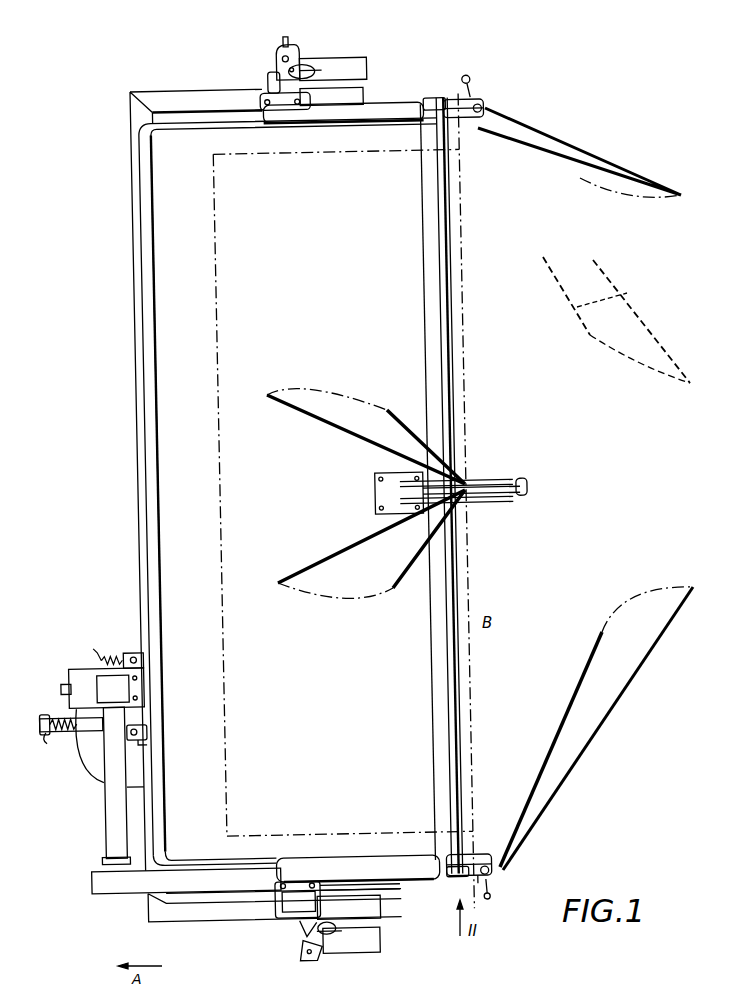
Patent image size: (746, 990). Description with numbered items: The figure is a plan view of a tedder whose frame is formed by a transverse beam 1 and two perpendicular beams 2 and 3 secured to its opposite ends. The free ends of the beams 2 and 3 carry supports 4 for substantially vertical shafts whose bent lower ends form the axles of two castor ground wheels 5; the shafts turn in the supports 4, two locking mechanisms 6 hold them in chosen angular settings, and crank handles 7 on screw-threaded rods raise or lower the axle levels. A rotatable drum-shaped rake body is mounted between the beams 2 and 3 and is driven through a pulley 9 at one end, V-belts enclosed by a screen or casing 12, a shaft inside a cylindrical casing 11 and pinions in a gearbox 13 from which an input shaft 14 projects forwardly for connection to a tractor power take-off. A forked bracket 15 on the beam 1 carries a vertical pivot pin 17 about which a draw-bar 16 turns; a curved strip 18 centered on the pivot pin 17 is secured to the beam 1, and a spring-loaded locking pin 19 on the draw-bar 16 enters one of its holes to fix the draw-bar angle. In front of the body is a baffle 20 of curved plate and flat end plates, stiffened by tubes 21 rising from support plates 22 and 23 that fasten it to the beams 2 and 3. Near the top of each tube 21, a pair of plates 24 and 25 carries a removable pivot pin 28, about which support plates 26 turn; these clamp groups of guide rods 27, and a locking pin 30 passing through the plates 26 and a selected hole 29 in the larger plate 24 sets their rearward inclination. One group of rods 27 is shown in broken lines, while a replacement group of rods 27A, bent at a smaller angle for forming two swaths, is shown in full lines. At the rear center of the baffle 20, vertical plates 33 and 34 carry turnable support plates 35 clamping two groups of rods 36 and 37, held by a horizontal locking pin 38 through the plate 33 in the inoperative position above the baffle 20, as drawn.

The beam 1 is at (138, 350).
The beam 2 is at (200, 918).
The beam 3 is at (205, 92).
The support 4 is at (268, 86).
The castor ground wheel 5 is at (367, 64).
The locking mechanism 6 is at (292, 50).
The crank handle 7 is at (320, 66).
The pulley 9 is at (392, 880).
The cylindrical casing 11 is at (112, 820).
The screen or casing 12 is at (132, 892).
The gearbox 13 is at (95, 666).
The input shaft 14 is at (64, 683).
The forked bracket 15 is at (148, 733).
The draw-bar 16 is at (46, 713).
The pivot pin 17 is at (150, 741).
The curved strip 18 is at (94, 770).
The locking pin 19 is at (48, 732).
The baffle 20 is at (152, 240).
The tube 21 is at (393, 104).
The support plate 22 is at (262, 97).
The support plate 23 is at (278, 868).
The plate 24 is at (462, 122).
The plate 25 is at (432, 100).
The support plate 26 is at (492, 878).
The guide rod 27 is at (612, 296).
The guide rod 27A is at (606, 172).
The removable pivot pin 28 is at (421, 135).
The hole 29 is at (470, 890).
The locking pin 30 is at (467, 78).
The vertical plate 33 is at (492, 505).
The vertical plate 34 is at (470, 478).
The support plate 35 is at (515, 480).
The rod 36 is at (390, 585).
The rod 37 is at (384, 418).
The locking pin 38 is at (452, 465).